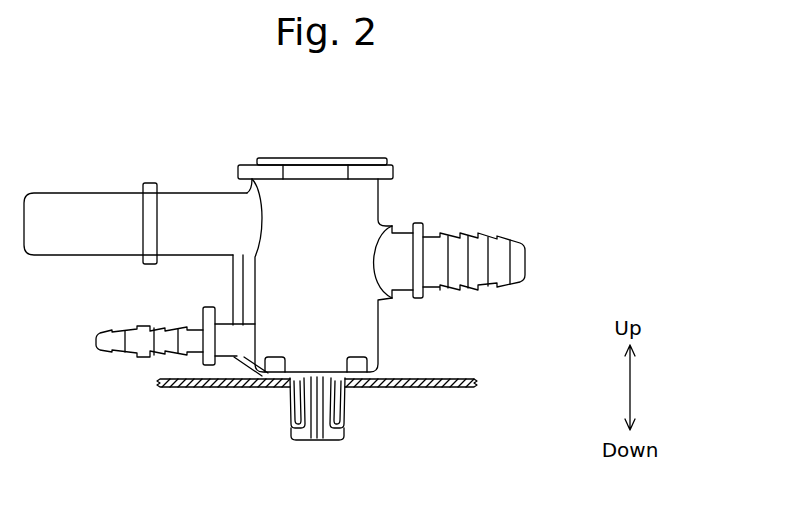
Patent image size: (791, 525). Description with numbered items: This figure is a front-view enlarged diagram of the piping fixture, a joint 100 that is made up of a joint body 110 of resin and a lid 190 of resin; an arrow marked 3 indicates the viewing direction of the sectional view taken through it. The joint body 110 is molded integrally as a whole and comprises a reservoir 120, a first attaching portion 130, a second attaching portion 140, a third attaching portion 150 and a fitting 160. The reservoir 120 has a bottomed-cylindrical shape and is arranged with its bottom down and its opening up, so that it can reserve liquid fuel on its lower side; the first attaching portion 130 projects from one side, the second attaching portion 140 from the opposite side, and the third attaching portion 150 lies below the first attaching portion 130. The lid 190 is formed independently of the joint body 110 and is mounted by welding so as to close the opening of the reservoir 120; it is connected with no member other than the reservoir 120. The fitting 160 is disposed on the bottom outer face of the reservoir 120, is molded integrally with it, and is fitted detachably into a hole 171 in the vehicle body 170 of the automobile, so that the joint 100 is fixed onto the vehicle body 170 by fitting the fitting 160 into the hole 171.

The viewing direction of FIG. 3 is at (323, 120).
The joint 100 is at (430, 90).
The joint body 110 is at (382, 205).
The reservoir 120 is at (262, 212).
The first attaching portion 130 is at (78, 192).
The second attaching portion 140 is at (503, 235).
The third attaching portion 150 is at (152, 356).
The fitting 160 is at (312, 440).
The vehicle body 170 is at (455, 389).
The hole 171 is at (340, 402).
The lid 190 is at (370, 158).